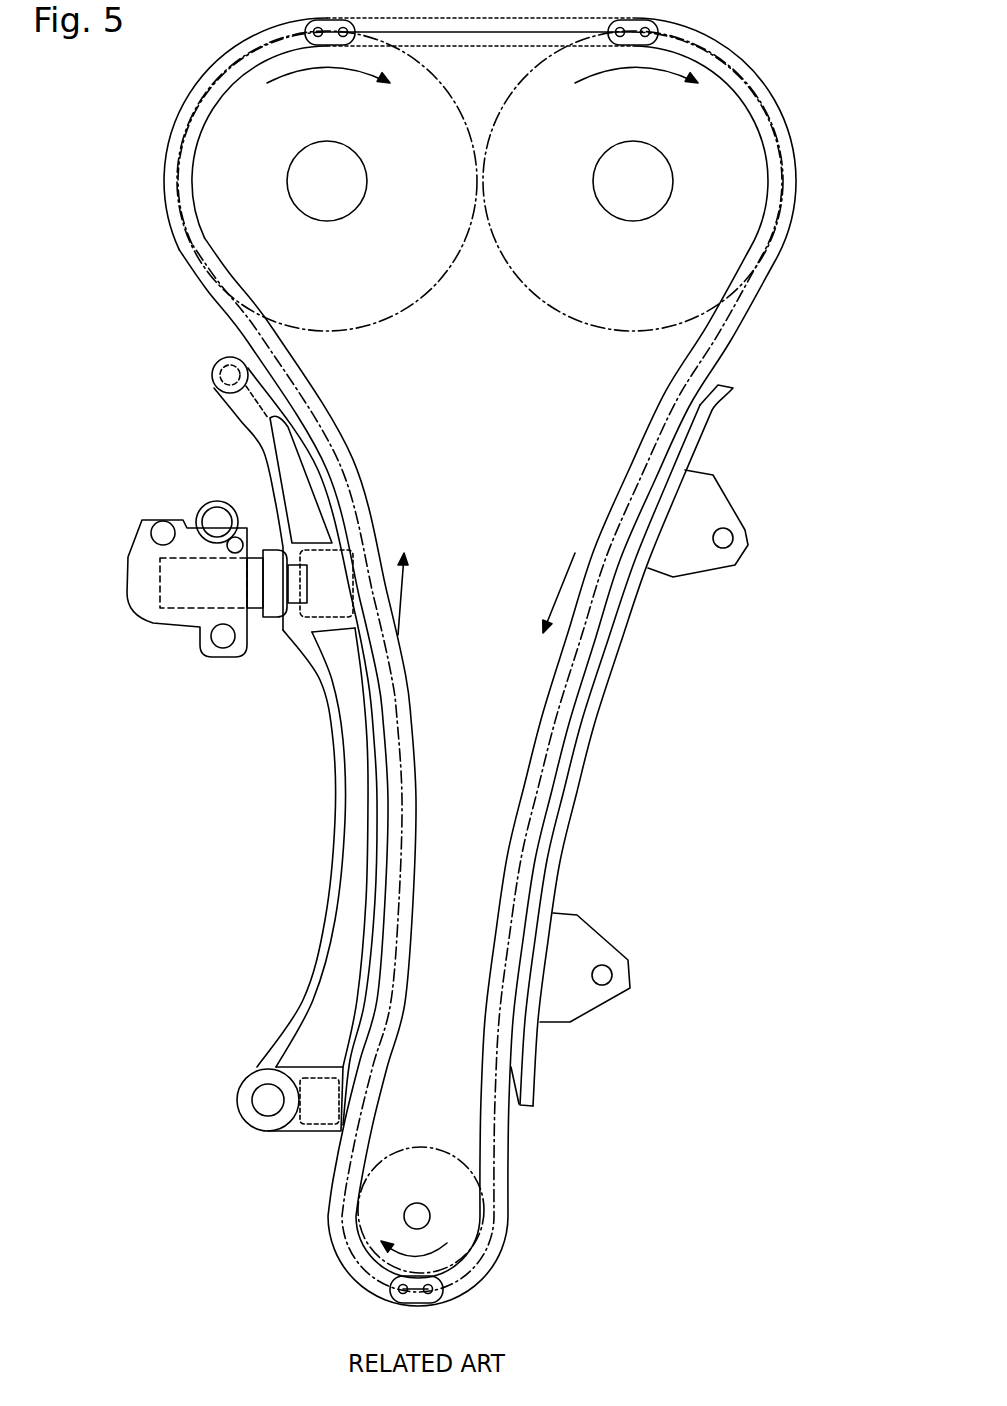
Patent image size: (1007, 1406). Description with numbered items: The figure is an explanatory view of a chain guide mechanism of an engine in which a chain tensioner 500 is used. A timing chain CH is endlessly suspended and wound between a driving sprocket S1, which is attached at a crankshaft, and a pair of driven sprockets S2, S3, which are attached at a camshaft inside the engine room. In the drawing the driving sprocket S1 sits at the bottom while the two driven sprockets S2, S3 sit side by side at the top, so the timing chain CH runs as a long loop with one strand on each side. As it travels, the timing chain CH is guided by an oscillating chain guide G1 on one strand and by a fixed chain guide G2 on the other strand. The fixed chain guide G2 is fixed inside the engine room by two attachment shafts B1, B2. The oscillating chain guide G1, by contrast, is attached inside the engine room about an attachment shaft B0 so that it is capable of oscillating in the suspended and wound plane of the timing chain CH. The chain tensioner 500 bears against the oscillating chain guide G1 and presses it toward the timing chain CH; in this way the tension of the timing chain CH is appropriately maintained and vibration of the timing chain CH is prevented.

The timing chain CH is at (727, 326).
The driving sprocket S1 is at (455, 1218).
The driven sprocket S2 is at (228, 175).
The driven sprocket S3 is at (712, 163).
The oscillating chain guide G1 is at (342, 973).
The fixed chain guide G2 is at (568, 805).
The attachment shaft B0 is at (256, 1101).
The attachment shaft B1 is at (733, 538).
The attachment shaft B2 is at (612, 975).
The chain tensioner 500 is at (148, 548).